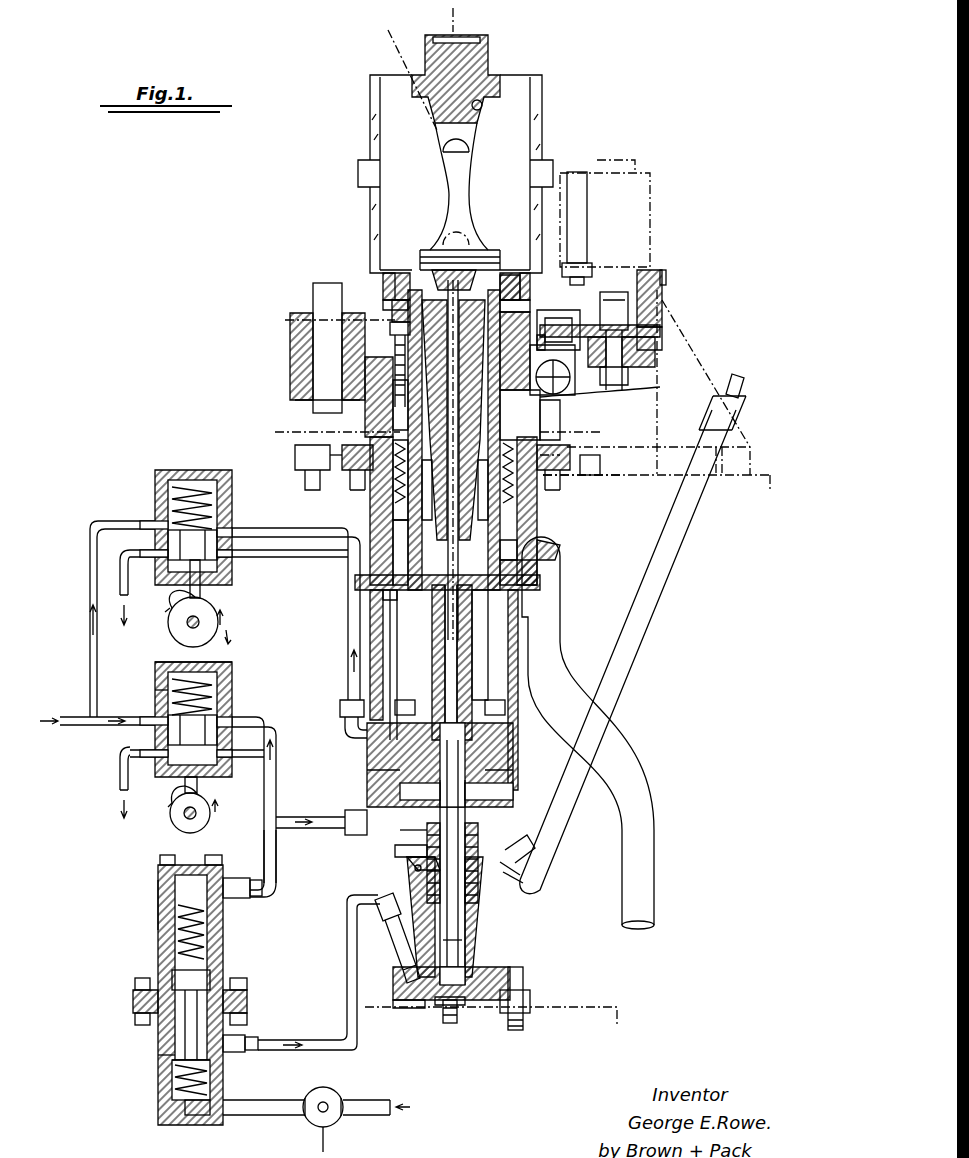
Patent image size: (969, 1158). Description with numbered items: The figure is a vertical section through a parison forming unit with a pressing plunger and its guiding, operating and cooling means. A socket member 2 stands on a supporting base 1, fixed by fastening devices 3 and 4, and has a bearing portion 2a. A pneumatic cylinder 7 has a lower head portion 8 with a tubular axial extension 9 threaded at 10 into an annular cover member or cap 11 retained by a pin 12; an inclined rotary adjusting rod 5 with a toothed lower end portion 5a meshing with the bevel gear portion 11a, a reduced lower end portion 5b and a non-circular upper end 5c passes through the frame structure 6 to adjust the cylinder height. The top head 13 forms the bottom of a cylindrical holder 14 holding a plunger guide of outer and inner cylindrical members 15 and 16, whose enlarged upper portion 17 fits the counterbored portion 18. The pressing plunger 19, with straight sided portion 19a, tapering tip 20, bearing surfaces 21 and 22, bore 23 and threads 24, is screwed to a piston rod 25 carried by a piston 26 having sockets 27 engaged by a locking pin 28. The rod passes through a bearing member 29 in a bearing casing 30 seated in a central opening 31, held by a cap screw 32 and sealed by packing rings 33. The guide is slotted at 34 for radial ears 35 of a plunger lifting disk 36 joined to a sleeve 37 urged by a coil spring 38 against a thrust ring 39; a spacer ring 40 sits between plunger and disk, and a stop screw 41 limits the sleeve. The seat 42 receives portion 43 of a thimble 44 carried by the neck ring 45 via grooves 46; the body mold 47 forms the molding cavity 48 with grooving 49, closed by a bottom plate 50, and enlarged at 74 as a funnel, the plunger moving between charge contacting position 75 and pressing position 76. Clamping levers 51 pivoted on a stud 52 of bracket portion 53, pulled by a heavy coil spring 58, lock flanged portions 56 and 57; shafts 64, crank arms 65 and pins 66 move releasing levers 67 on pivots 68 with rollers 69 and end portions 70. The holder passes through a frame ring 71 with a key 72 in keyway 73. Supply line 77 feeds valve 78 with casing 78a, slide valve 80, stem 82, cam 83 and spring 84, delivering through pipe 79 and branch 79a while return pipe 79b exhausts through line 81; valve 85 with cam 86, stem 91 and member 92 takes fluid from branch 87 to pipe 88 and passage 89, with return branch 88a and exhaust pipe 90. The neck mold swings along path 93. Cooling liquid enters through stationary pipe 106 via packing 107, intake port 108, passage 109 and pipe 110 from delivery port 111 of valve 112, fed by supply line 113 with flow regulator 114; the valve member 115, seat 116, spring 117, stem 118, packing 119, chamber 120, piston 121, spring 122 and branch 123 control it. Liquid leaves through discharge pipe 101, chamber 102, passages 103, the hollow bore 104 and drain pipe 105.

The supporting base 1 is at (575, 1007).
The socket member 2 is at (480, 965).
The bearing portion 2a is at (524, 872).
The fastening device 3 is at (455, 1020).
The fastening device 4 is at (524, 990).
The inclined rotary adjusting rod 5 is at (628, 637).
The toothed lower end portion 5a is at (530, 850).
The reduced lower end portion 5b is at (530, 890).
The non-circular upper end portion 5c is at (744, 390).
The frame structure 6 is at (756, 442).
The pneumatic cylinder 7 is at (528, 675).
The lower head portion 8 is at (385, 845).
The tubular axial extension 9 is at (427, 830).
The screw thread engagement 10 is at (470, 850).
The annular cover member or cap 11 is at (405, 862).
The bevel gear portion 11a is at (397, 852).
The pin 12 is at (408, 880).
The top head 13 is at (520, 572).
The cylindrical holder 14 is at (532, 400).
The outer cylindrical member 15 is at (540, 432).
The inner cylindrical member 16 is at (560, 436).
The externally enlarged upper portion 17 is at (565, 377).
The counterbored upper end portion 18 is at (553, 378).
The pressing plunger 19 is at (453, 420).
The straight sided portion 19a is at (395, 400).
The tapering tip 20 is at (475, 252).
The enlarged bearing surface 21 is at (395, 490).
The enlarged bearing surface 22 is at (275, 432).
The plunger bore 23 is at (436, 275).
The screw threads 24 is at (540, 498).
The piston rod 25 is at (472, 634).
The piston 26 is at (367, 770).
The open-topped sockets 27 is at (450, 700).
The spring pressed detent or locking pin 28 is at (530, 610).
The bearing member 29 is at (398, 605).
The bearing casing 30 is at (378, 600).
The central opening 31 is at (370, 585).
The cap screw 32 is at (370, 555).
The packing rings 33 is at (440, 588).
The vertical slot 34 is at (398, 500).
The radial ears 35 is at (425, 505).
The plunger lifting disk 36 is at (517, 550).
The spring pressed sleeve 37 is at (575, 480).
The coil spring 38 is at (640, 474).
The stationary thrust ring 39 is at (560, 550).
The spacer ring 40 is at (470, 605).
The vertically adjustable stop screw 41 is at (345, 335).
The annular seat 42 is at (525, 305).
The complementarily configured portion 43 is at (558, 318).
The thimble 44 is at (388, 300).
The neck ring 45 is at (392, 275).
The internal horizontal grooves 46 is at (392, 312).
The body mold 47 is at (545, 112).
The molding cavity 48 is at (470, 172).
The internal grooving 49 is at (512, 275).
The bottom plate or closure member 50 is at (478, 60).
The clamping levers 51 is at (392, 335).
The upstanding stud or shaft 52 is at (296, 318).
The bracket portion 53 is at (368, 378).
The beveled flanged portion of plunger guide 56 is at (655, 355).
The beveled flanged portion of thimble 57 is at (590, 325).
The heavy coil spring 58 is at (615, 384).
The short vertical shafts 64 is at (625, 160).
The crank arms 65 is at (635, 192).
The actuating pins 66 is at (590, 195).
The releasing levers 67 is at (662, 315).
The vertical pivot elements 68 is at (660, 345).
The rollers 69 is at (592, 305).
The outwardly turned outer end portions 70 is at (668, 278).
The stationary frame ring 71 is at (585, 450).
The key 72 is at (298, 455).
The vertical keyway 73 is at (340, 478).
The upwardly enlarged portion 74 is at (482, 105).
The charge contacting position 75 is at (460, 225).
The pressing position 76 is at (470, 140).
The pressure fluid supply line 77 is at (85, 728).
The valve 78 is at (245, 703).
The valve casing 78a is at (158, 705).
The pressure fluid delivery pipe 79 is at (278, 737).
The branch delivery pipe 79a is at (330, 817).
The pressure fluid return pipe 79b is at (255, 760).
The slide valve 80 is at (205, 715).
The exhaust line 81 is at (118, 780).
The valve stem 82 is at (170, 806).
The cam 83 is at (212, 810).
The spring 84 is at (210, 672).
The valve 85 is at (150, 463).
The cam 86 is at (220, 610).
The branch of supply line 87 is at (94, 521).
The pressure fluid delivery pipe 88 is at (252, 545).
The pressure fluid return branch 88a is at (282, 560).
The passage 89 is at (398, 675).
The exhaust pipe 90 is at (130, 595).
The stem 91 is at (170, 614).
The spring pressed valve member 92 is at (178, 540).
The arcuate path 93 is at (388, 40).
The liquid discharge pipe 101 is at (464, 460).
The enlarged lower bore portion 102 is at (581, 463).
The inclined drainage passages 103 is at (355, 443).
The hollow bore of piston rod 104 is at (458, 660).
The final drain pipe 105 is at (632, 805).
The stationary pipe 106 is at (465, 942).
The packing 107 is at (470, 912).
The lateral intake port 108 is at (420, 1008).
The liquid supply passage 109 is at (400, 975).
The liquid delivery pipe 110 is at (347, 997).
The delivery port 111 is at (235, 1055).
The cooling liquid control valve 112 is at (158, 1030).
The cooling liquid supply line 113 is at (250, 1118).
The flow regulator 114 is at (330, 1095).
The movable valve member 115 is at (172, 1080).
The valve seat 116 is at (160, 1060).
The spring 117 is at (190, 1105).
The valve stem 118 is at (212, 980).
The packing 119 is at (240, 955).
The chamber 120 is at (225, 945).
The piston 121 is at (165, 895).
The spring 122 is at (160, 930).
The branch of air supply line 123 is at (278, 872).